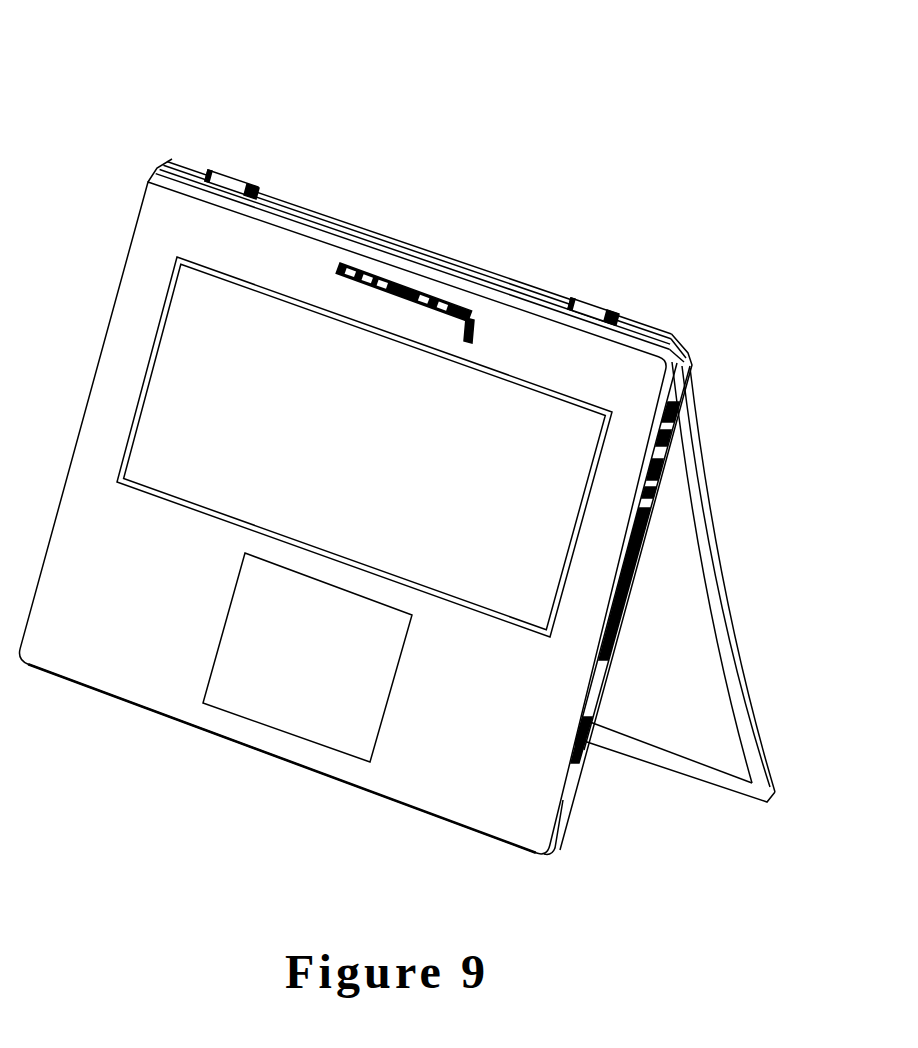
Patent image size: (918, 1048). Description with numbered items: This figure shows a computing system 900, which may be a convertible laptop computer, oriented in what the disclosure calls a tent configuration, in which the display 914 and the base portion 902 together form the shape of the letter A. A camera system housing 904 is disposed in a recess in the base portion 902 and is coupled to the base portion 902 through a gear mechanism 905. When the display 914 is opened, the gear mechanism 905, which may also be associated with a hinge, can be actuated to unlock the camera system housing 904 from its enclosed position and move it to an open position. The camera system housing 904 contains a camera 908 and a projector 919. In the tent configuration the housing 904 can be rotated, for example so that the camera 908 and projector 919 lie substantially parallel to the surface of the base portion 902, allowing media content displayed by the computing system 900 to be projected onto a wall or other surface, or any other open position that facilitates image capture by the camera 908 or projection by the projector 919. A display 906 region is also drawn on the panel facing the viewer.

The computing system 900 is at (260, 68).
The base portion 902 is at (124, 377).
The camera system housing 904 is at (451, 301).
The gear mechanism 905 is at (477, 336).
The display 906 is at (573, 508).
The camera 908 is at (408, 280).
The display 914 is at (686, 735).
The projector 919 is at (431, 290).